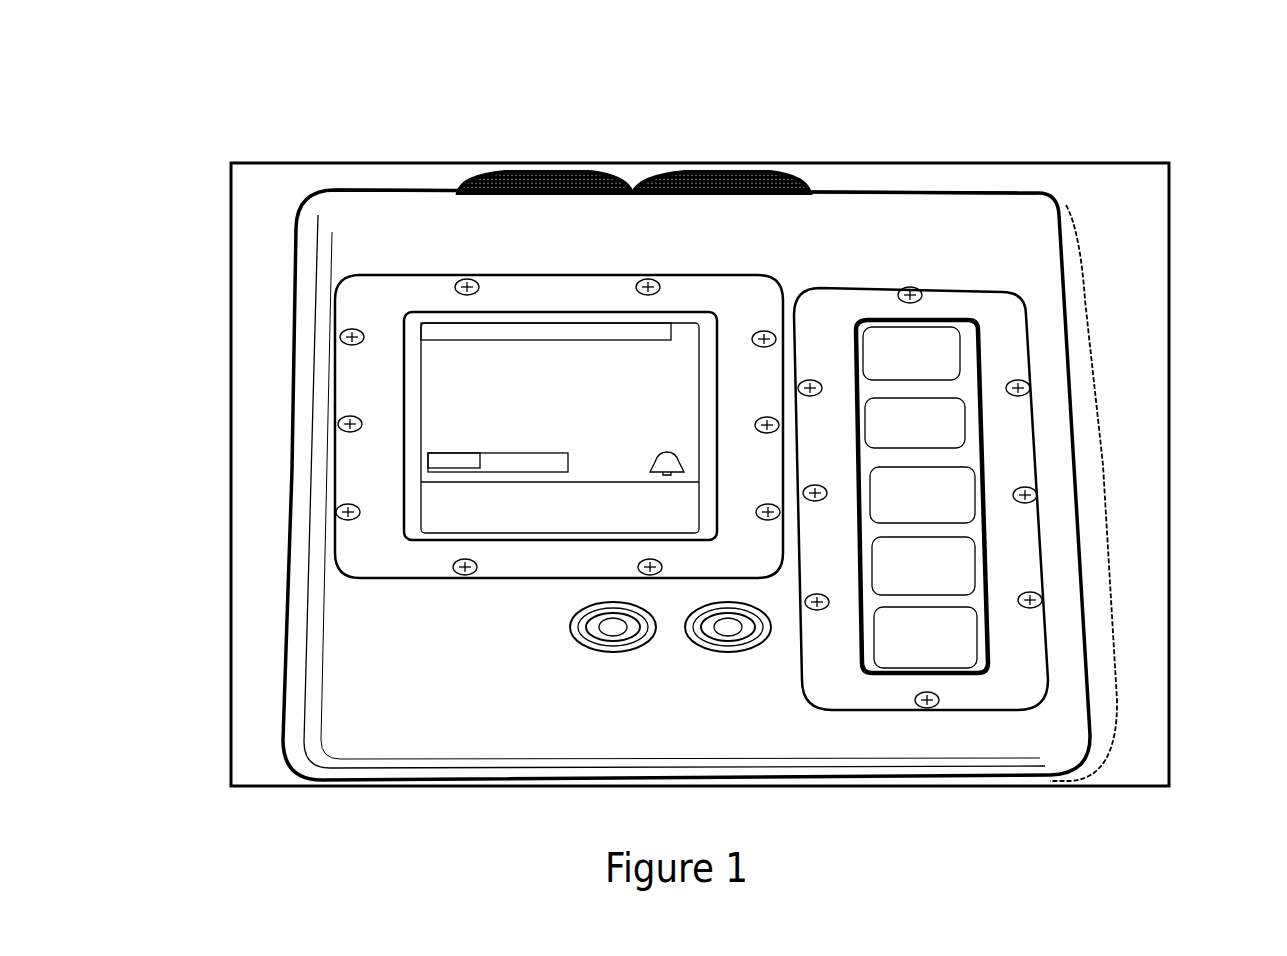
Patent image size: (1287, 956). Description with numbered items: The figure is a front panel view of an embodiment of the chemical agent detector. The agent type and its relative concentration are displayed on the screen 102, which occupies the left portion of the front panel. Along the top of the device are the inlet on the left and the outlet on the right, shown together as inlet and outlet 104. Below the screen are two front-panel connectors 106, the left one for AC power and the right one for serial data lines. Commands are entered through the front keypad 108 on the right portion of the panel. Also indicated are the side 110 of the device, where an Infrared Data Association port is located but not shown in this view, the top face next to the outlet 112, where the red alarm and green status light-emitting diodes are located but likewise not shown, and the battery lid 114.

The screen 102 is at (467, 390).
The inlet and outlet 104 is at (520, 160).
The front-panel connectors 106 is at (667, 663).
The front keypad 108 is at (920, 495).
The side 110 is at (1095, 307).
The top face next to the outlet 112 is at (915, 190).
The battery lid 114 is at (1113, 690).